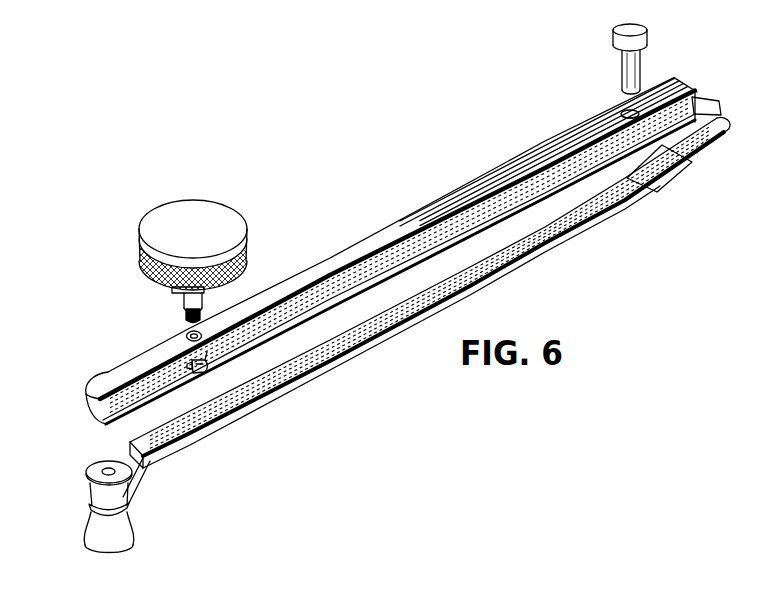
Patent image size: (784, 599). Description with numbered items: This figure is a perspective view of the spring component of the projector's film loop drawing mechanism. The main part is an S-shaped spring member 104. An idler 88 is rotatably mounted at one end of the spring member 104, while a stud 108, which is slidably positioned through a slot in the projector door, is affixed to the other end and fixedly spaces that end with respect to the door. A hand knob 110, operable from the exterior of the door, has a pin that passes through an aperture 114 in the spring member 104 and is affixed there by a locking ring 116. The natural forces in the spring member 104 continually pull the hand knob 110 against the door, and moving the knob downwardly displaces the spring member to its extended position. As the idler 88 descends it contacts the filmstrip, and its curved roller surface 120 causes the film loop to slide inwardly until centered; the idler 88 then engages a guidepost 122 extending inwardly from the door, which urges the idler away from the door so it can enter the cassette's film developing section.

The idler 88 is at (97, 460).
The S-shaped spring member 104 is at (427, 207).
The stud 108 is at (646, 52).
The hand knob 110 is at (208, 234).
The aperture 114 is at (185, 335).
The locking ring 116 is at (206, 364).
The curved roller surface 120 is at (92, 488).
The guidepost 122 is at (184, 311).